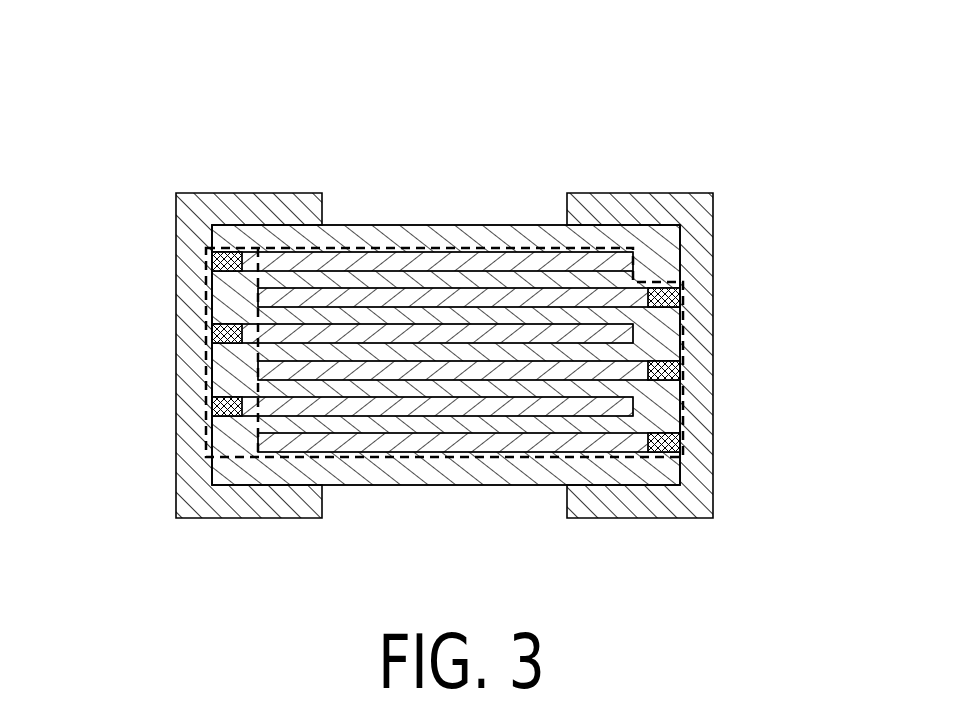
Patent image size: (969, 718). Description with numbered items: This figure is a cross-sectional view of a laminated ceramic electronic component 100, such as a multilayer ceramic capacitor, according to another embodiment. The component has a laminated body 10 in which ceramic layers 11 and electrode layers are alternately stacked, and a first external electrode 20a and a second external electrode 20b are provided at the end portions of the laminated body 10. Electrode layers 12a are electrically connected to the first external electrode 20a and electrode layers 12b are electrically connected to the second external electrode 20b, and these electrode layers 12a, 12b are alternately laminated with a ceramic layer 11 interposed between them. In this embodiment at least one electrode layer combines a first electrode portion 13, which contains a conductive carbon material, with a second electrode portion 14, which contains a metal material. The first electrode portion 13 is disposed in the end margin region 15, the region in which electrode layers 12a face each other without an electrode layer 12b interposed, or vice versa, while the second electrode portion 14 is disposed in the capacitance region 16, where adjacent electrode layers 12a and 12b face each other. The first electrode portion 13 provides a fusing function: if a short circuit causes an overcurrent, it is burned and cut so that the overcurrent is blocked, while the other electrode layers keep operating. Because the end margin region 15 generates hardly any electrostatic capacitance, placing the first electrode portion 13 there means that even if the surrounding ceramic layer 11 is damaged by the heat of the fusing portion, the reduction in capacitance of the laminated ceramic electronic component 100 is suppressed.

The laminated ceramic electronic component 100 is at (707, 113).
The laminated body 10 is at (461, 333).
The ceramic layer 11 is at (400, 275).
The electrode layer 12a is at (225, 408).
The electrode layer 12b is at (512, 443).
The first electrode portion 13 is at (690, 444).
The second electrode portion 14 is at (444, 352).
The end margin region 15 is at (172, 462).
The capacitance region 16 is at (496, 462).
The first external electrode 20a is at (193, 262).
The second external electrode 20b is at (702, 277).